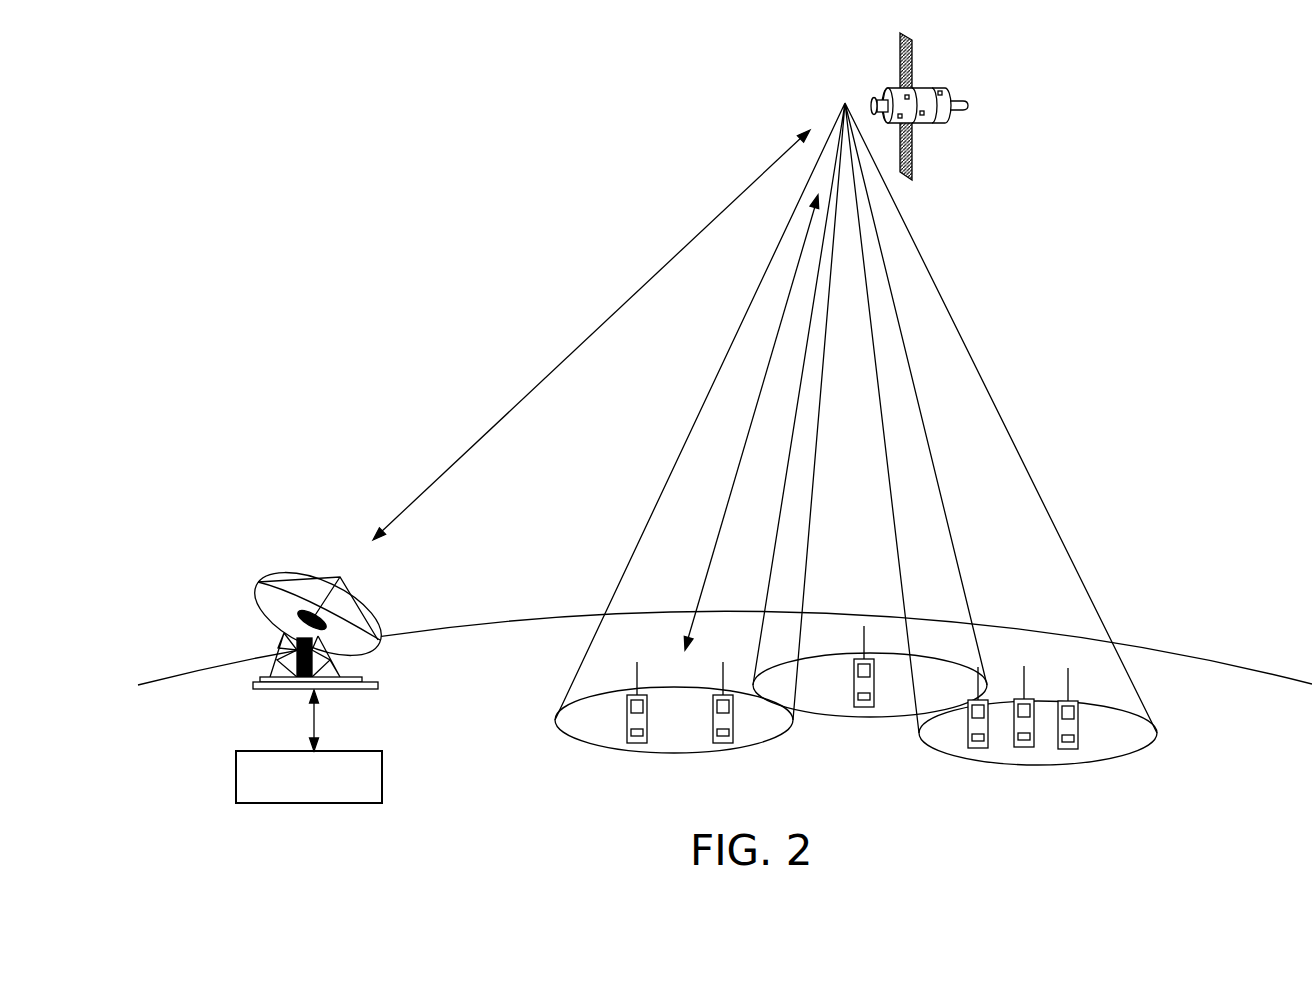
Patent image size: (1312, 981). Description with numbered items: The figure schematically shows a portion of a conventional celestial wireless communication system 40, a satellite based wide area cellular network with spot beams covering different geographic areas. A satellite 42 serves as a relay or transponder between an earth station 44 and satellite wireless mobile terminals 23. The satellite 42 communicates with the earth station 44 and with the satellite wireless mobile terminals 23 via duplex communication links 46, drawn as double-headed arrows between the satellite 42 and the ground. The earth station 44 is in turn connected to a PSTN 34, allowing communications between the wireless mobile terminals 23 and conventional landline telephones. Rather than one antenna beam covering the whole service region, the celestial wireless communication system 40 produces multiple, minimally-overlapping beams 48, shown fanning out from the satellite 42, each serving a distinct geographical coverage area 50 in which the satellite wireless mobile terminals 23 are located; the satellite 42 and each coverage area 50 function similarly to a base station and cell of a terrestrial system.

The celestial wireless communication system 40 is at (725, 421).
The satellite 42 is at (999, 152).
The earth station 44 is at (265, 692).
The PSTN 34 is at (382, 778).
The duplex communication links 46 is at (542, 383).
The beams 48 is at (685, 437).
The coverage area 50 is at (680, 753).
The satellite wireless mobile terminals 23 is at (623, 717).